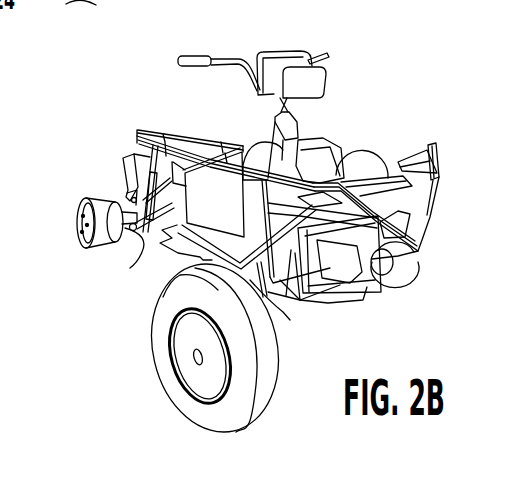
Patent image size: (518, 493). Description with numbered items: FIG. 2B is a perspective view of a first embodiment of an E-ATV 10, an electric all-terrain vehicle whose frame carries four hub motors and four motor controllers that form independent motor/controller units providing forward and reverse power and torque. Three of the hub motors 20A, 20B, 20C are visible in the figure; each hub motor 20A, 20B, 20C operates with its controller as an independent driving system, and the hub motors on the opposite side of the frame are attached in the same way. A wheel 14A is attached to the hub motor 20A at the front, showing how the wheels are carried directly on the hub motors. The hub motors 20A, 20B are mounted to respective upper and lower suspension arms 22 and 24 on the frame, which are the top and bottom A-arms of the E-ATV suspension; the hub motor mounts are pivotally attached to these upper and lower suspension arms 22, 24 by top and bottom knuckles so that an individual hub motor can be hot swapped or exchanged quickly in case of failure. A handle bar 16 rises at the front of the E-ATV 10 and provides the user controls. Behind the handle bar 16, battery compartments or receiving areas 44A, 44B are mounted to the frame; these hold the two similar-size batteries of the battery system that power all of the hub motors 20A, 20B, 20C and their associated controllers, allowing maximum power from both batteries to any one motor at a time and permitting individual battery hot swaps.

The E-ATV 10 is at (373, 72).
The handle bar 16 is at (320, 57).
The battery compartment 44A is at (222, 146).
The battery compartment 44B is at (180, 135).
The upper suspension arm 22 is at (132, 196).
The lower suspension arm 24 is at (142, 250).
The hub motor 20A is at (197, 370).
The hub motor 20B is at (88, 198).
The hub motor 20C is at (405, 262).
The wheel 14A is at (210, 415).